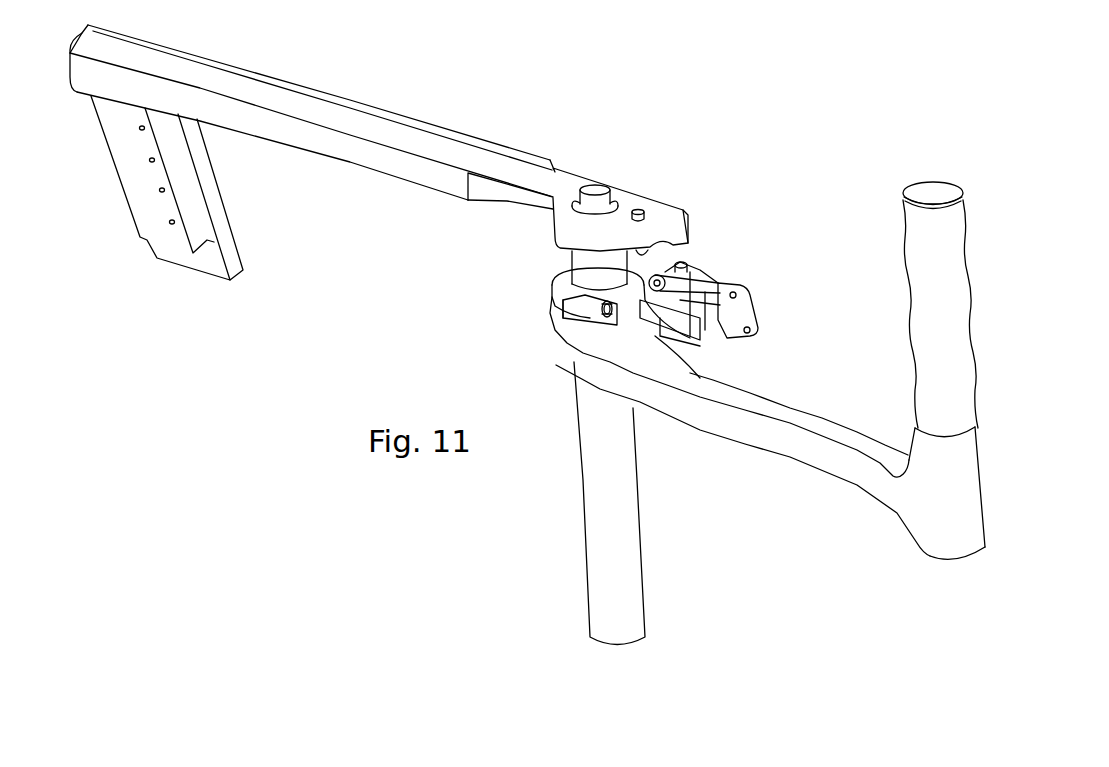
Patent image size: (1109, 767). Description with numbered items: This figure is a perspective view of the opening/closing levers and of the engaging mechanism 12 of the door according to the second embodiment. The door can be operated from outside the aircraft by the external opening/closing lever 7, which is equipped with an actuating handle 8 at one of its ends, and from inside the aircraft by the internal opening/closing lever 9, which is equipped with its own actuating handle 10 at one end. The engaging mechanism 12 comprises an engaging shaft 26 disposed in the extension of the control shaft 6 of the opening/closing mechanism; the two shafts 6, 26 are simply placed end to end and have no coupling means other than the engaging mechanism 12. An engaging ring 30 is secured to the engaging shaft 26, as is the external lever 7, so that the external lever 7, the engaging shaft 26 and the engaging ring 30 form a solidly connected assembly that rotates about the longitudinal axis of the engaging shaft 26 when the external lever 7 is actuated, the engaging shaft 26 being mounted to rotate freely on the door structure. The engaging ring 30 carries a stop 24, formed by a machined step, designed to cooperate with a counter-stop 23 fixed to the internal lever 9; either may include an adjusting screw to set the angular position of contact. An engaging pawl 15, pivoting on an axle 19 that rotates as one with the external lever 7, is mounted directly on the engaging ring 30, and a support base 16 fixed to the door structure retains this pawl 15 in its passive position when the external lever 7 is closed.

The control shaft 6 is at (613, 545).
The external opening/closing lever 7 is at (300, 103).
The actuating handle 8 is at (172, 233).
The internal opening/closing lever 9 is at (767, 445).
The actuating handle 10 is at (947, 313).
The engaging mechanism 12 is at (660, 183).
The engaging pawl 15 is at (680, 332).
The support base 16 is at (735, 313).
The axle 19 is at (690, 265).
The counter-stop 23 is at (553, 318).
The stop 24 is at (608, 330).
The engaging shaft 26 is at (587, 265).
The engaging ring 30 is at (682, 268).